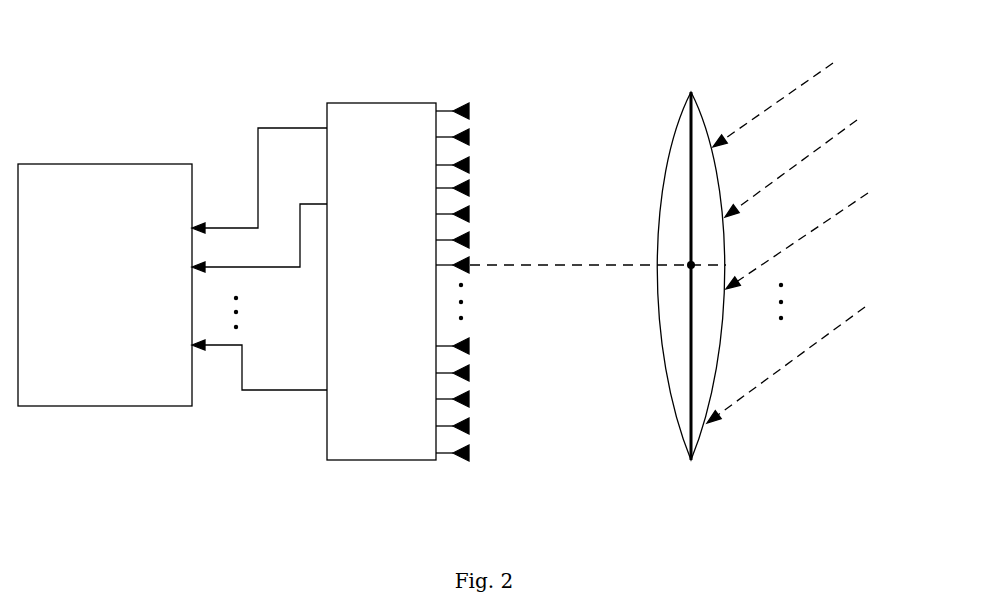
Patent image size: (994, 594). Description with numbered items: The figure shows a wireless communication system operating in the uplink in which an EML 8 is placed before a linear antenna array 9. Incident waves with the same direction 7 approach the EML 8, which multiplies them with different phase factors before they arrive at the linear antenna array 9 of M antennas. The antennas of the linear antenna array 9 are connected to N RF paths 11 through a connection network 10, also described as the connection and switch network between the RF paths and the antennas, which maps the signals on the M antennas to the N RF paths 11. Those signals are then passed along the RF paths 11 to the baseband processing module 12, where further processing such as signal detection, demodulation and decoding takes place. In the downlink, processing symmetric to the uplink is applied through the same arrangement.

The incident waves with the same direction 7 is at (820, 229).
The EML 8 is at (691, 248).
The linear antenna array 9 is at (581, 252).
The connection network 10 is at (381, 268).
The RF paths 11 is at (259, 227).
The baseband processing module 12 is at (105, 274).